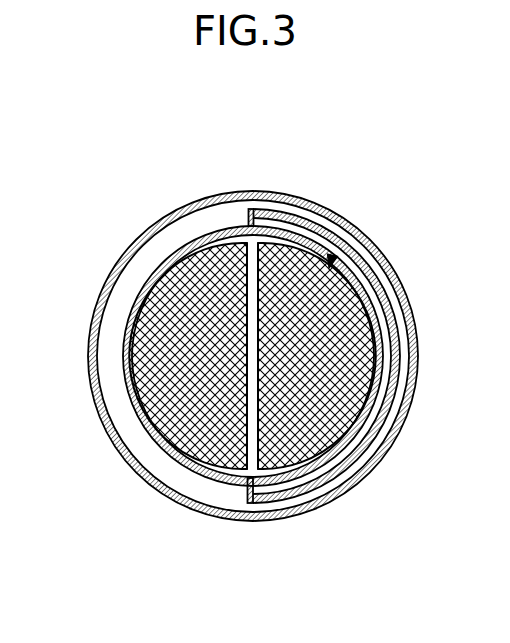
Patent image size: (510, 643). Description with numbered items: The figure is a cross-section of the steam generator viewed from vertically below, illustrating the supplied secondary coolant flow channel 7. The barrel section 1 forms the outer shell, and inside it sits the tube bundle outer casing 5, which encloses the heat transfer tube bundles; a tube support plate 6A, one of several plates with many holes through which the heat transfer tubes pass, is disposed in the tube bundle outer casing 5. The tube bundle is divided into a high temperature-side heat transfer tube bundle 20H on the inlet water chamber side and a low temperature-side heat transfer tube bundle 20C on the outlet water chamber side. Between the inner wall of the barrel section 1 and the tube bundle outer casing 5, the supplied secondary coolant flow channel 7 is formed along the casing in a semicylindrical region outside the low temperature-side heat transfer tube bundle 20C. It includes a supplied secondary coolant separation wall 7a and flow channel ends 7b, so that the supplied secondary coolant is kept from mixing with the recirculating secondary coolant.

The barrel section 1 is at (380, 250).
The tube bundle outer casing 5 is at (123, 378).
The tube support plate 6A is at (332, 260).
The supplied secondary coolant flow channel 7 is at (383, 323).
The supplied secondary coolant separation wall 7a is at (375, 443).
The flow channel ends 7b is at (250, 212).
The high temperature-side heat transfer tube bundle 20H is at (216, 252).
The low temperature-side heat transfer tube bundle 20C is at (303, 258).